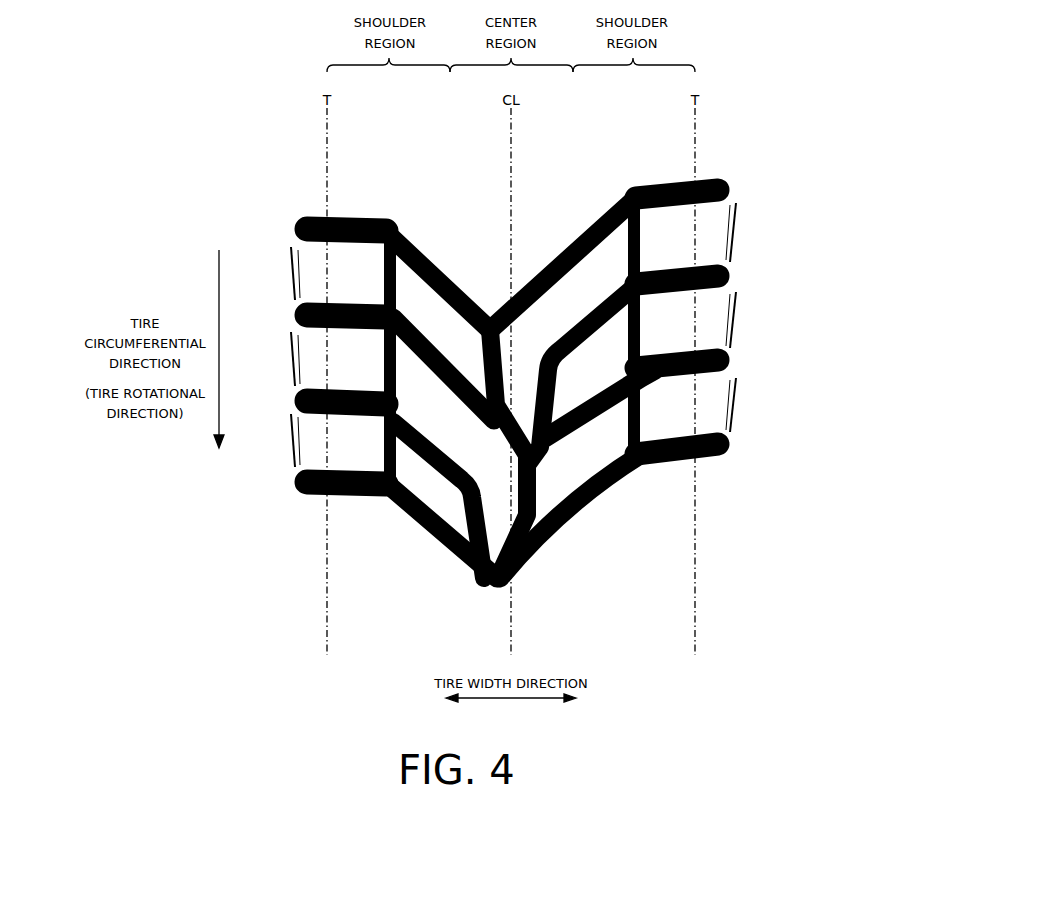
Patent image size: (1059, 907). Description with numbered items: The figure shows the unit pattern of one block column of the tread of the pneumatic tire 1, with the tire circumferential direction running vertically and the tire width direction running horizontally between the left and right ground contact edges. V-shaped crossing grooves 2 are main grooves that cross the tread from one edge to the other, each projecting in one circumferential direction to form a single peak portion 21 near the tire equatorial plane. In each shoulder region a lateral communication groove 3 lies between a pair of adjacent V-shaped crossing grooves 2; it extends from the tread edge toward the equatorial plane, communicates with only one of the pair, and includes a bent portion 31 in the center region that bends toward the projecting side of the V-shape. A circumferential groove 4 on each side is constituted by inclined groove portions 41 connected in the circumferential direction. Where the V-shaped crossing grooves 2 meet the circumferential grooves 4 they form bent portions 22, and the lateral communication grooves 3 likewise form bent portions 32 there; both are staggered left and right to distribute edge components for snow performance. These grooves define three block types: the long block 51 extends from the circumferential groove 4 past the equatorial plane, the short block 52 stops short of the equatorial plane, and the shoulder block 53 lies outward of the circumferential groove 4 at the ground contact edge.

The pneumatic tire 1 is at (720, 74).
The V-shaped crossing groove 2 is at (726, 193).
The lateral communication groove 3 is at (506, 319).
The circumferential groove 4 is at (511, 313).
The peak portion 21 is at (483, 333).
The bent portion 22 is at (395, 236).
The bent portion 31 is at (466, 487).
The bent portion 32 is at (388, 406).
The inclined groove portion 41 is at (386, 268).
The long block 51 is at (570, 292).
The short block 52 is at (442, 318).
The shoulder block 53 is at (312, 287).